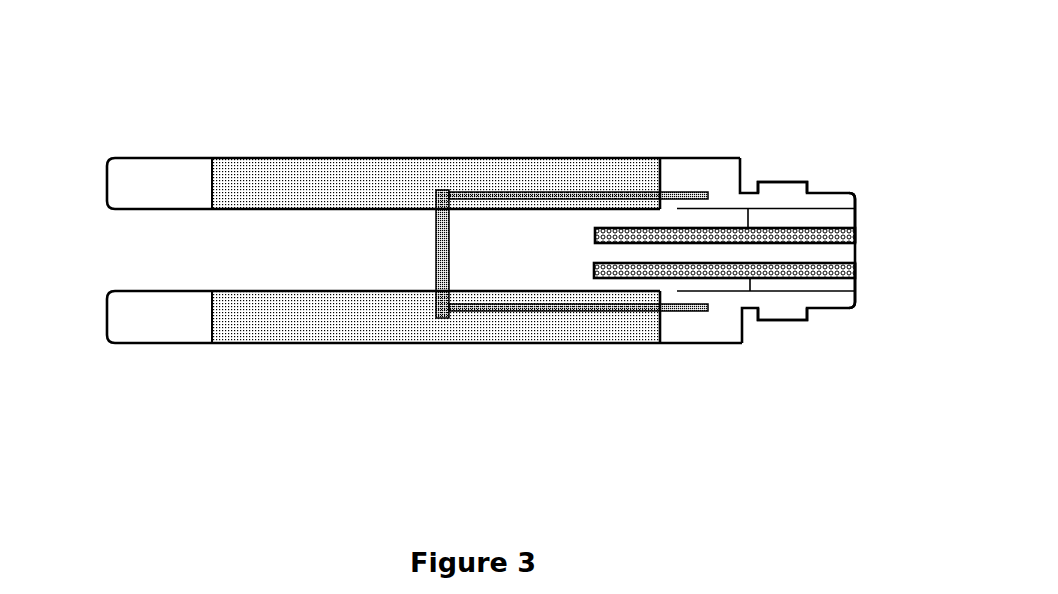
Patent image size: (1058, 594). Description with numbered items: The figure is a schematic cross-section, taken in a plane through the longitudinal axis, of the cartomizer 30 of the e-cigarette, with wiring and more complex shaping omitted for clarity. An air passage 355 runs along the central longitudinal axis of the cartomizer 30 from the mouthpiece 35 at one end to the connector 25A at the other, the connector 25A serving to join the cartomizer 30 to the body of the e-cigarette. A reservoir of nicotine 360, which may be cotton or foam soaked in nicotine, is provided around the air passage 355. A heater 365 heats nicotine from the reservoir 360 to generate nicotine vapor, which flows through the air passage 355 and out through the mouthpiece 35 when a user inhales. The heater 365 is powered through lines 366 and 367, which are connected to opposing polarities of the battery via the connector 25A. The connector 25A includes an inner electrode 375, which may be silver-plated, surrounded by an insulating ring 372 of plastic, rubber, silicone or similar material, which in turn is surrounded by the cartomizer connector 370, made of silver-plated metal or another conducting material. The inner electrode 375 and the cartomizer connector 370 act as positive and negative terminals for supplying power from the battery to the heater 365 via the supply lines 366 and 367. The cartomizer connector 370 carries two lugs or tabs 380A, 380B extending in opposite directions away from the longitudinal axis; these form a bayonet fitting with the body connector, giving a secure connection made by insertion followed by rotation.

The cartomizer 30 is at (306, 358).
The mouthpiece 35 is at (118, 364).
The air passage 355 is at (270, 250).
The reservoir of nicotine 360 is at (330, 185).
The heater 365 is at (433, 230).
The power line 366 is at (578, 193).
The power line 367 is at (538, 310).
The cartomizer connector 370 is at (818, 202).
The insulating ring 372 is at (835, 218).
The inner electrode 375 is at (805, 272).
The lug or tab 380A is at (781, 192).
The lug or tab 380B is at (780, 310).
The connector 25A is at (845, 320).